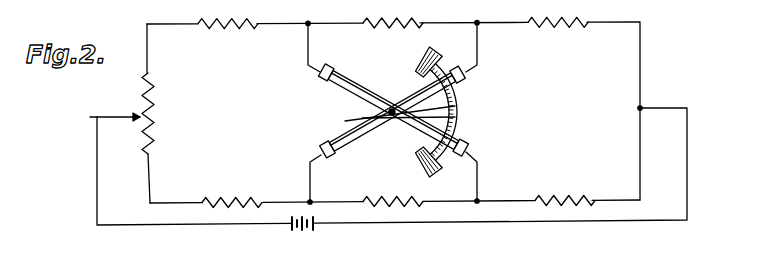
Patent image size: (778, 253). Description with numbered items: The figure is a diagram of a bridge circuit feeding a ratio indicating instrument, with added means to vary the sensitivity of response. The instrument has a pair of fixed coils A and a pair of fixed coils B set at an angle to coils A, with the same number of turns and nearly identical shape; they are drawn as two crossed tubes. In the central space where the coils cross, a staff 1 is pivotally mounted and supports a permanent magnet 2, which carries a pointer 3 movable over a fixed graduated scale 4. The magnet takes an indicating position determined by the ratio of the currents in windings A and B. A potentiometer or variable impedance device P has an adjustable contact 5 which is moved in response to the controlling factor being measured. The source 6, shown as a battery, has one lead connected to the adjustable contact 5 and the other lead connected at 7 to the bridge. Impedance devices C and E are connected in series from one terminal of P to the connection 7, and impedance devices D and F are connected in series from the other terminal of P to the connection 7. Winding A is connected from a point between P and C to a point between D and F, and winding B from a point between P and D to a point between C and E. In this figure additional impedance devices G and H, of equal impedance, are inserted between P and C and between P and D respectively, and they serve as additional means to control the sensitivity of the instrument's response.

The staff 1 is at (393, 109).
The permanent magnet 2 is at (372, 114).
The pointer 3 is at (457, 119).
The graduated scale 4 is at (453, 103).
The adjustable contact 5 is at (135, 117).
The source 6 is at (489, 180).
The connection 7 is at (631, 110).
The fixed coils A is at (343, 74).
The fixed coils B is at (369, 134).
The potentiometer P is at (159, 113).
The impedance device G is at (228, 14).
The impedance device C is at (393, 14).
The impedance device E is at (558, 13).
The impedance device H is at (232, 193).
The impedance device D is at (393, 192).
The impedance device F is at (565, 191).